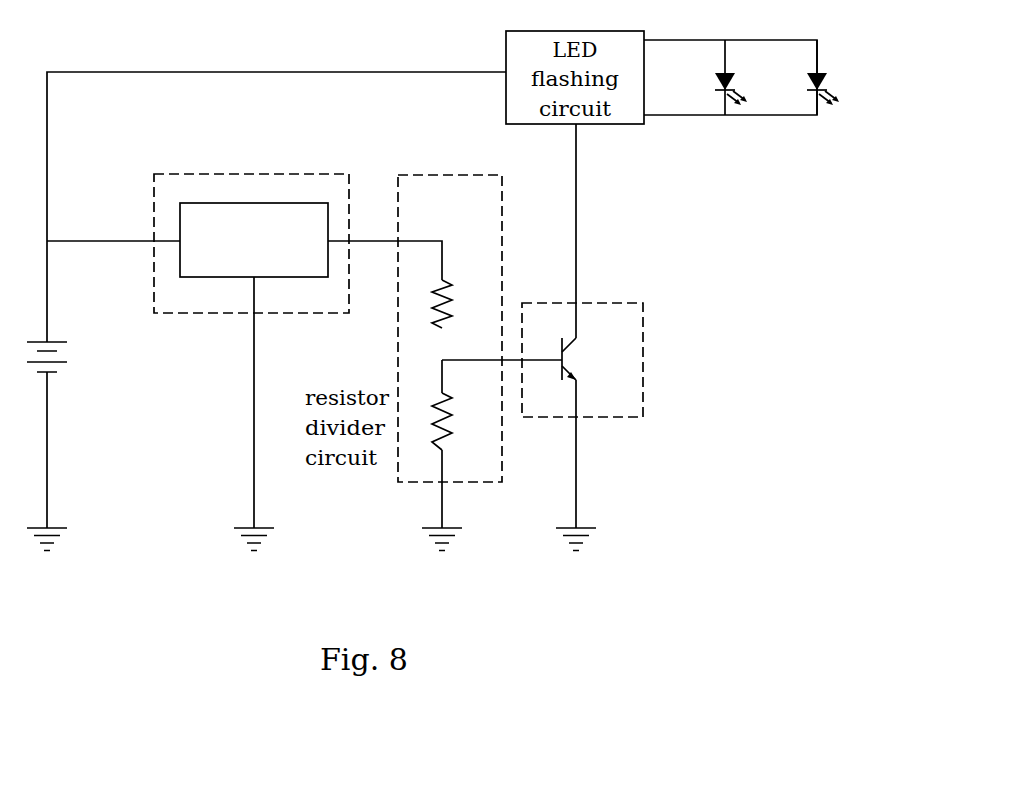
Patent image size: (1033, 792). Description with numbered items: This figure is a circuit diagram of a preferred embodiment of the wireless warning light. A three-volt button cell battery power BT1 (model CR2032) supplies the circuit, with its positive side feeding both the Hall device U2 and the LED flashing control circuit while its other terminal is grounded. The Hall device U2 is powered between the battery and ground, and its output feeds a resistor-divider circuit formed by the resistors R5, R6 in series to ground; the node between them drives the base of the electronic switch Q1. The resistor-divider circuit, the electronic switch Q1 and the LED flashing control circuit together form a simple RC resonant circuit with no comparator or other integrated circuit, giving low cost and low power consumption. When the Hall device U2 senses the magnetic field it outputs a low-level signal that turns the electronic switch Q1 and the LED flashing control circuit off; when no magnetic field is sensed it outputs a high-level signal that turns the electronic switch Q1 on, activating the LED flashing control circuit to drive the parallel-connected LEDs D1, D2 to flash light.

The battery power BT1 is at (121, 365).
The Hall device U2 is at (251, 225).
The resistor R5 is at (461, 304).
The resistor R6 is at (461, 405).
The electronic switch Q1 is at (641, 360).
The LED D1 is at (738, 77).
The LED D2 is at (830, 77).